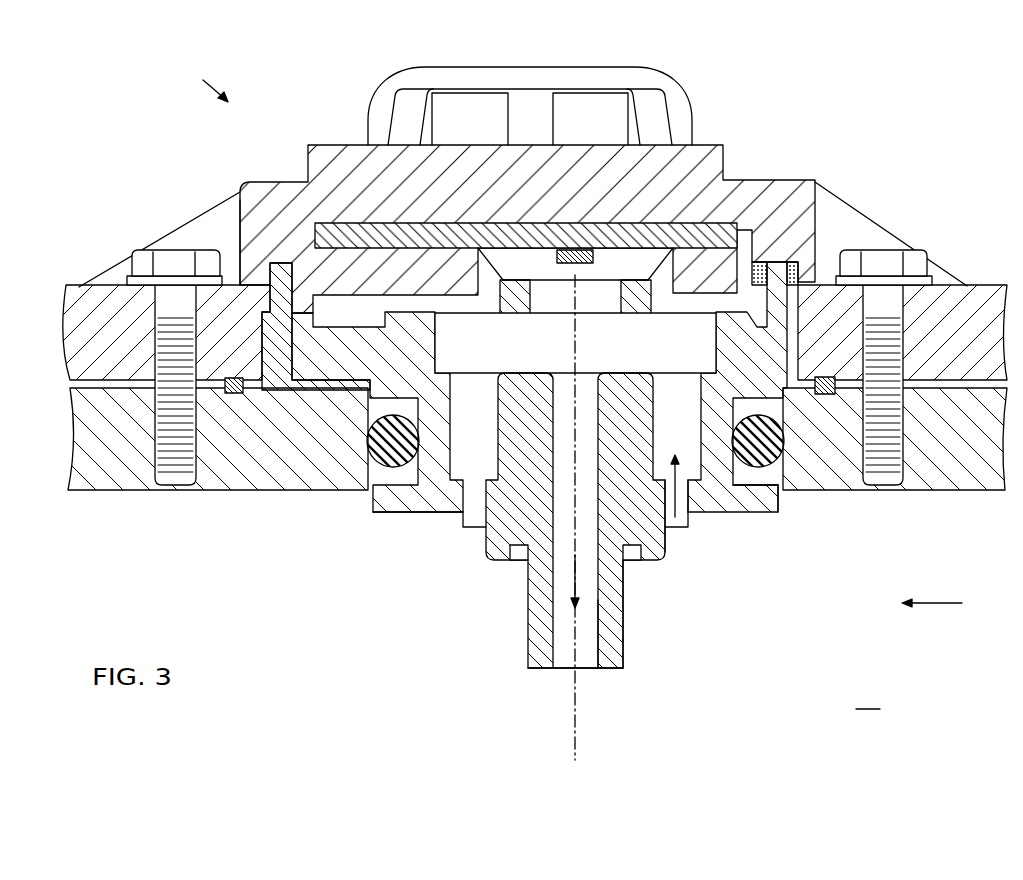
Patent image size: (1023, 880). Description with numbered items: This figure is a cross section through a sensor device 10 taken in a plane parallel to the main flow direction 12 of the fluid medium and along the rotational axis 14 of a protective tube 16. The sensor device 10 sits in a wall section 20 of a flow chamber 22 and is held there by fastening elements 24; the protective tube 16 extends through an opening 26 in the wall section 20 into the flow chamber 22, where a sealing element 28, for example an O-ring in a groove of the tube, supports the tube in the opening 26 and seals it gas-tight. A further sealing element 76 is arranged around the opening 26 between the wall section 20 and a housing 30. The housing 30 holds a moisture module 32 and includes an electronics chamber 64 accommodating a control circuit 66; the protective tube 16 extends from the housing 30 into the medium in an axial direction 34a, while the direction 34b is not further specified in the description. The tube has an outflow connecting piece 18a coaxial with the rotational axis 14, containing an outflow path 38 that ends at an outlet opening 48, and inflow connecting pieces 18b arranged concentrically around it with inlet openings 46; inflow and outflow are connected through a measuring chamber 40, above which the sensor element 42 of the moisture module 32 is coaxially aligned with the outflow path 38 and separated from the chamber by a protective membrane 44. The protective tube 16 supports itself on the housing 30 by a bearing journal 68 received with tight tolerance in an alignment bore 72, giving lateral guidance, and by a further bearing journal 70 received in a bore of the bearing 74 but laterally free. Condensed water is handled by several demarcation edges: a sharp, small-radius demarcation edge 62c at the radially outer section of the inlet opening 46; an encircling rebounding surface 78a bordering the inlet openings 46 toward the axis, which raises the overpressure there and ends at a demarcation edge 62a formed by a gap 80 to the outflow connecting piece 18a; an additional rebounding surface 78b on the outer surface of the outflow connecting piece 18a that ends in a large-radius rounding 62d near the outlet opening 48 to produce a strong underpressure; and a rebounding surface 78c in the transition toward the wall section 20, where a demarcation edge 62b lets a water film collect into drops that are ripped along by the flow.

The sensor device 10 is at (204, 77).
The main flow direction 12 is at (941, 605).
The rotational axis 14 is at (580, 748).
The protective tube 16 is at (500, 618).
The outflow connecting piece 18a is at (530, 640).
The inflow connecting piece 18b is at (450, 526).
The wall section 20 is at (957, 452).
The flow chamber 22 is at (867, 697).
The fastening elements 24 is at (175, 262).
The opening 26 is at (375, 513).
The sealing element 28 is at (385, 455).
The housing 30 is at (752, 205).
The moisture module 32 is at (350, 226).
The axial direction 34a is at (622, 598).
The second sleeve section 34b is at (720, 515).
The outflow path 38 is at (585, 632).
The measuring chamber 40 is at (606, 362).
The sensor element 42 is at (577, 250).
The protective membrane 44 is at (530, 333).
The inlet opening 46 is at (680, 527).
The outlet opening 48 is at (565, 668).
The demarcation edge 62a is at (640, 565).
The demarcation edge 62b is at (770, 515).
The demarcation edge 62c is at (692, 524).
The rounding 62d is at (625, 660).
The electronics chamber 64 is at (692, 95).
The control circuit 66 is at (478, 107).
The bearing journal 68 is at (241, 247).
The further bearing journal 70 is at (760, 275).
The alignment bore 72 is at (283, 263).
The bore of the bearing 74 is at (792, 268).
The further sealing element 76 is at (233, 395).
The rebounding surface 78a is at (688, 540).
The rebounding surface 78b is at (640, 650).
The rebounding surface 78c is at (780, 512).
The gap 80 is at (512, 565).